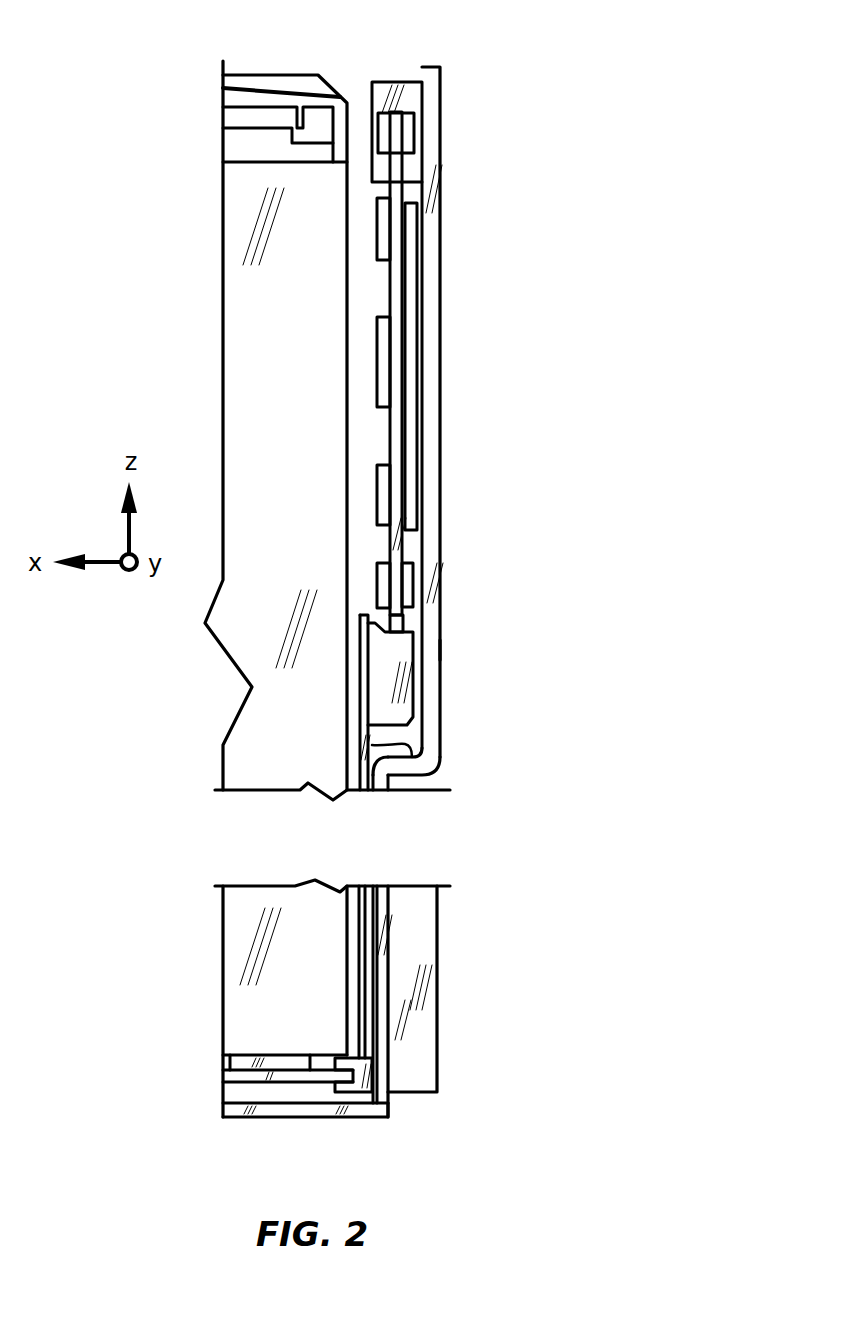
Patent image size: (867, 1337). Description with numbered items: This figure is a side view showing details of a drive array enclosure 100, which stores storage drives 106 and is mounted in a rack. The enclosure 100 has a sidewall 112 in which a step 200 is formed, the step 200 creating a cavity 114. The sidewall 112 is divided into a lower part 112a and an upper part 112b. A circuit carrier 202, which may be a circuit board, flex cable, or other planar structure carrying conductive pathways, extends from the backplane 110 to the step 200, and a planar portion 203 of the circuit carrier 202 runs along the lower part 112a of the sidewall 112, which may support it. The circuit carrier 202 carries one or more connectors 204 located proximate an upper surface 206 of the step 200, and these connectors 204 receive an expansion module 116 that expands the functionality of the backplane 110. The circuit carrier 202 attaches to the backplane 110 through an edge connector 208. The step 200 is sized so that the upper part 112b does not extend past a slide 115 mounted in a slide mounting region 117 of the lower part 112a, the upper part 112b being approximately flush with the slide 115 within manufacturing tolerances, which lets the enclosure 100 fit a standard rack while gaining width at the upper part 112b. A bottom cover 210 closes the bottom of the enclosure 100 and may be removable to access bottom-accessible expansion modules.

The drive array enclosure 100 is at (618, 280).
The storage drive 106 is at (283, 80).
The backplane 110 is at (300, 1075).
The sidewall 112 is at (440, 648).
The lower part of the sidewall 112a is at (397, 999).
The upper part of the sidewall 112b is at (440, 490).
The cavity 114 is at (360, 117).
The slide 115 is at (420, 957).
The expansion module 116 is at (400, 436).
The slide mounting region 117 is at (388, 930).
The step 200 is at (418, 775).
The circuit carrier 202 is at (412, 745).
The planar portion 203 is at (362, 907).
The connector 204 is at (412, 694).
The upper surface 206 is at (393, 775).
The edge connector 208 is at (372, 1075).
The bottom cover 210 is at (262, 1120).